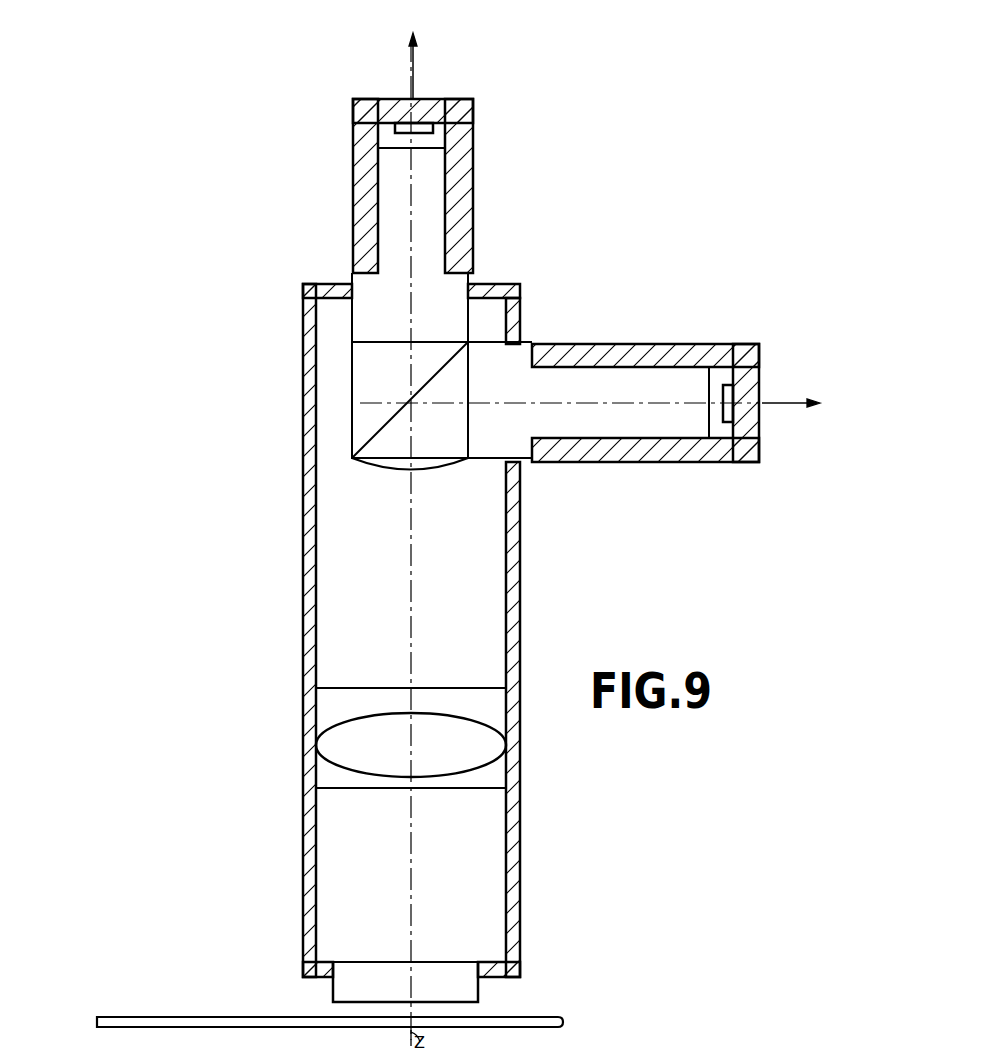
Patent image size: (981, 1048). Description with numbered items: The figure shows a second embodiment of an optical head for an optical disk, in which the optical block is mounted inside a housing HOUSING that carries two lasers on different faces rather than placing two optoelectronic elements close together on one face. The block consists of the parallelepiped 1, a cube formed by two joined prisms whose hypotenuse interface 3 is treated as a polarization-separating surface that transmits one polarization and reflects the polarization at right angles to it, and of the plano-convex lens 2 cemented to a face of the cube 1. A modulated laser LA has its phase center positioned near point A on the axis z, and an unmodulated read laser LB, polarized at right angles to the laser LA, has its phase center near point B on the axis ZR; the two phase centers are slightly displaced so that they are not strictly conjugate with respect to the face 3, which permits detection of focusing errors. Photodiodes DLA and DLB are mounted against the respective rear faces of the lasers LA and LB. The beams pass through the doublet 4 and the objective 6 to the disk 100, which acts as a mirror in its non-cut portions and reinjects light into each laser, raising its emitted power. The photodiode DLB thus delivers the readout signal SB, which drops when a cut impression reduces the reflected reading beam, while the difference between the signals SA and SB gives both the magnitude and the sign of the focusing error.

The parallelepiped 1 is at (363, 403).
The plano-convex lens 2 is at (430, 462).
The interface 3 is at (372, 432).
The doublet 4 is at (340, 748).
The objective 6 is at (330, 870).
The disk 100 is at (290, 1017).
The housing HOUSING is at (303, 600).
The photodiode DL_A DLA is at (387, 138).
The laser L_A LA is at (376, 293).
The laser L_B LB is at (505, 432).
The photodiode DL_B DLB is at (720, 440).
The output signal s_A SA is at (415, 53).
The readout signal s_B SB is at (806, 399).
The axis z_R ZR is at (772, 401).